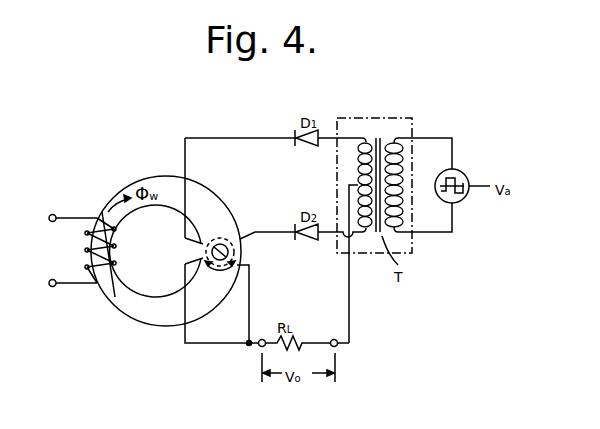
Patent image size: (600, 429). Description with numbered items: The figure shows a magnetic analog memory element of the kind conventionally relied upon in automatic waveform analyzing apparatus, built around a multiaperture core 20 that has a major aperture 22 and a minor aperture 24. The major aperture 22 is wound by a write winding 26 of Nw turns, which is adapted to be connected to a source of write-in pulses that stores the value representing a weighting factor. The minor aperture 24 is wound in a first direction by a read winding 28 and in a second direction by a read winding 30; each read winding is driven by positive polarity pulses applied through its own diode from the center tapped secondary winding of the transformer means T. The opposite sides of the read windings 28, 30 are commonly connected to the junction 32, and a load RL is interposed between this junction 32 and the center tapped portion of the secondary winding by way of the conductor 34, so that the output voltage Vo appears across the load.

The multiaperture core 20 is at (135, 308).
The major aperture 22 is at (132, 277).
The minor aperture 24 is at (227, 240).
The write winding 26 is at (82, 250).
The read winding 28 is at (240, 238).
The read winding 30 is at (193, 235).
The junction 32 is at (260, 347).
The conductor 34 is at (337, 347).